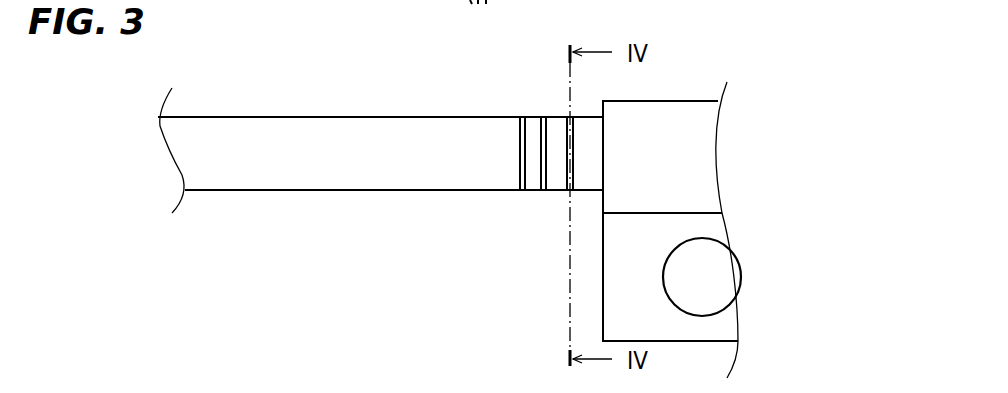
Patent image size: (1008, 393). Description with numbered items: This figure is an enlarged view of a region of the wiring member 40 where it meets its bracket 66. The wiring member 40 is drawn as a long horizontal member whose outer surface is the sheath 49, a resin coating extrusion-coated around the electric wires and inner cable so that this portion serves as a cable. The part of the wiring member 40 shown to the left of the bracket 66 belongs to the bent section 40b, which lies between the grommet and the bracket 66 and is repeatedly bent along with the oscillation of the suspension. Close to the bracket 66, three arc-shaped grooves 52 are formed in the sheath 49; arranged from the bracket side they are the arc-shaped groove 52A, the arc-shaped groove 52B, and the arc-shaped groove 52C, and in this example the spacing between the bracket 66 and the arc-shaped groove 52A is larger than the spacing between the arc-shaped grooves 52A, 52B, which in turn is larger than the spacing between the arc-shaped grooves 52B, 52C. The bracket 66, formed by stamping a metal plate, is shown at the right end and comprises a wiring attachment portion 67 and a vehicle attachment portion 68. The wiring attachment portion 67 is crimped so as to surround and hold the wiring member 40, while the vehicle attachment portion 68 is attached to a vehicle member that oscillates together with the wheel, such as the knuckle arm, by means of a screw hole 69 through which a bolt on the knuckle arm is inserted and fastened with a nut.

The wiring member 40 is at (380, 167).
The bent section 40b is at (284, 192).
The sheath 49 is at (399, 130).
The arc-shaped grooves 52 is at (497, 205).
The arc-shaped groove 52A is at (568, 192).
The arc-shaped groove 52B is at (542, 192).
The arc-shaped groove 52C is at (522, 192).
The bracket 66 is at (714, 230).
The wiring attachment portion 67 is at (700, 167).
The vehicle attachment portion 68 is at (705, 277).
The screw hole 69 is at (710, 311).